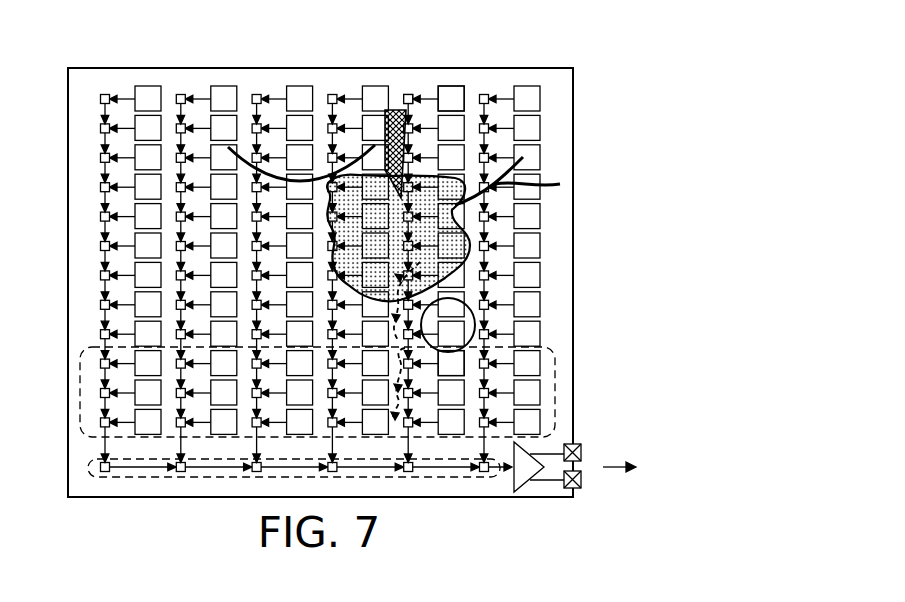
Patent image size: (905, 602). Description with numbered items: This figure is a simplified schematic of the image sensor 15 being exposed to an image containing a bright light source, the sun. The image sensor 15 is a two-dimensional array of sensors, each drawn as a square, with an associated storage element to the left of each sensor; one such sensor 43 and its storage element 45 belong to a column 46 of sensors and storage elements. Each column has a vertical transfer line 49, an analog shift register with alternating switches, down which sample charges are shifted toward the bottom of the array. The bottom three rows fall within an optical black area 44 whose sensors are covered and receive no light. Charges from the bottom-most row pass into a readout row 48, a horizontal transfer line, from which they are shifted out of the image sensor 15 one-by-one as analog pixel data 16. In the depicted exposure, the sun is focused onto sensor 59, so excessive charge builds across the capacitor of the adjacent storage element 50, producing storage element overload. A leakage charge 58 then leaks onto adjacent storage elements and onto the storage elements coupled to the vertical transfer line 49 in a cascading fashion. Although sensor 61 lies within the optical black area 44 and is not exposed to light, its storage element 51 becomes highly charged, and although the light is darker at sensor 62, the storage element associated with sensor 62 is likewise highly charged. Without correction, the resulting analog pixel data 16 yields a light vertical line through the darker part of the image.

The image sensor 15 is at (563, 68).
The analog pixel data 16 is at (624, 464).
The sensor 43 is at (445, 86).
The optical black area 44 is at (80, 434).
The storage element 45 is at (411, 90).
The column 46 is at (443, 54).
The readout row 48 is at (100, 478).
The vertical transfer line 49 is at (401, 102).
The storage element 50 is at (394, 324).
The storage element 51 is at (396, 372).
The leakage charge 58 is at (396, 345).
The sensor 59 is at (441, 340).
The sensor 61 is at (441, 371).
The sensor 62 is at (441, 253).